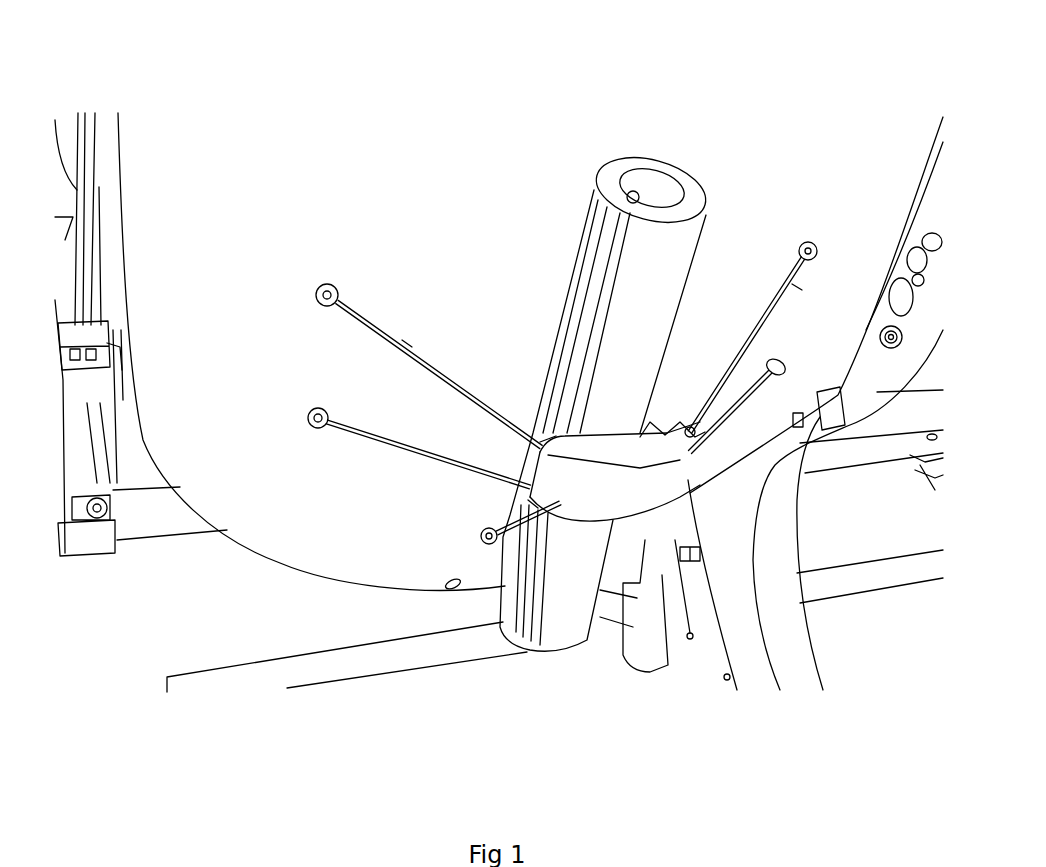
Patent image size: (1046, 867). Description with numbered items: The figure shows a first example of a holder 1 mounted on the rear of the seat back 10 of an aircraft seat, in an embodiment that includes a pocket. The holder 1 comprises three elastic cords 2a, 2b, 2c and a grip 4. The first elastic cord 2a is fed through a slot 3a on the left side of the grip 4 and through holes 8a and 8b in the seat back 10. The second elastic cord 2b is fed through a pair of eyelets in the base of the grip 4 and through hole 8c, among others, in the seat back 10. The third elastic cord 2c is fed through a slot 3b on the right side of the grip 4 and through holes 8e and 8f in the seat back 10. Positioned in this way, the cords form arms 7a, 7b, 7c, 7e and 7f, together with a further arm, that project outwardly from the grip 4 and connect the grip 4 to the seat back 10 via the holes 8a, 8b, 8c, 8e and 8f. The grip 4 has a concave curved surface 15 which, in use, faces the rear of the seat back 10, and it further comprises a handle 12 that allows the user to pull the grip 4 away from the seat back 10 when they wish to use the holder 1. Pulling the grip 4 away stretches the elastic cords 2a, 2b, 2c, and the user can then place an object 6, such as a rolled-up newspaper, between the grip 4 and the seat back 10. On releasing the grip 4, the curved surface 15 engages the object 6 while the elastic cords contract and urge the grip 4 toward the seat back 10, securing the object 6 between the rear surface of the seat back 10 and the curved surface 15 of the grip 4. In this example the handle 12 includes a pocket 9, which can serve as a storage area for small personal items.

The holder 1 is at (490, 127).
The first elastic cord 2a is at (407, 343).
The second elastic cord 2b is at (533, 507).
The third elastic cord 2c is at (797, 287).
The slot 3a is at (558, 432).
The slot 3b is at (695, 428).
The grip 4 is at (613, 503).
The object 6 is at (618, 160).
The arm 7a is at (367, 312).
The arm 7b is at (360, 428).
The arm 7c is at (527, 517).
The arm 7e is at (740, 407).
The arm 7f is at (767, 313).
The hole 8a is at (330, 290).
The hole 8b is at (320, 412).
The hole 8c is at (484, 529).
The hole 8e is at (779, 370).
The hole 8f is at (800, 243).
The pocket 9 is at (640, 432).
The seat back 10 is at (253, 517).
The handle 12 is at (700, 540).
The concave curved surface 15 is at (605, 433).